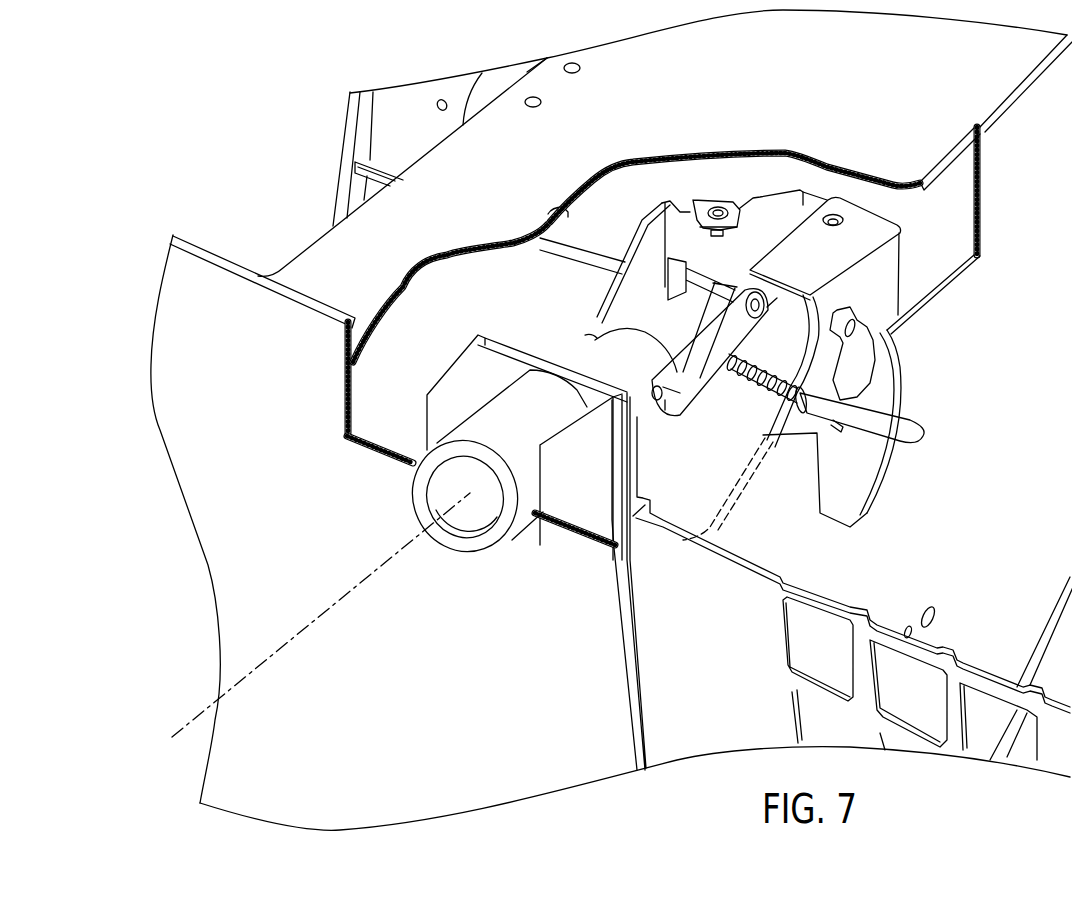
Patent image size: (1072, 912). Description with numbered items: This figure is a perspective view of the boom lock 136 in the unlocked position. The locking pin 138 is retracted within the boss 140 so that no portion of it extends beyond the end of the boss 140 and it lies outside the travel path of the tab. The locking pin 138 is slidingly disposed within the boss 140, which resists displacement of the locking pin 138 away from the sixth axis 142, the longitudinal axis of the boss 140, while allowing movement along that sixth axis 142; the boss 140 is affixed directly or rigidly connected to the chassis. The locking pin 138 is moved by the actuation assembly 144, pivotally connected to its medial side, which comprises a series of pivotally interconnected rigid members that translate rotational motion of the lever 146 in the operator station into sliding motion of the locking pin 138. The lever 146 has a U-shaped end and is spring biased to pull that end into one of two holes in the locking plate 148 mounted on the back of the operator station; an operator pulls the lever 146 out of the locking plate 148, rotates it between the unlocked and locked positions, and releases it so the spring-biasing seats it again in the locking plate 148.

The boom lock 136 is at (408, 490).
The locking pin 138 is at (447, 493).
The boss 140 is at (483, 418).
The sixth axis 142 is at (257, 668).
The actuation assembly 144 is at (616, 301).
The lever 146 is at (900, 443).
The locking plate 148 is at (863, 363).